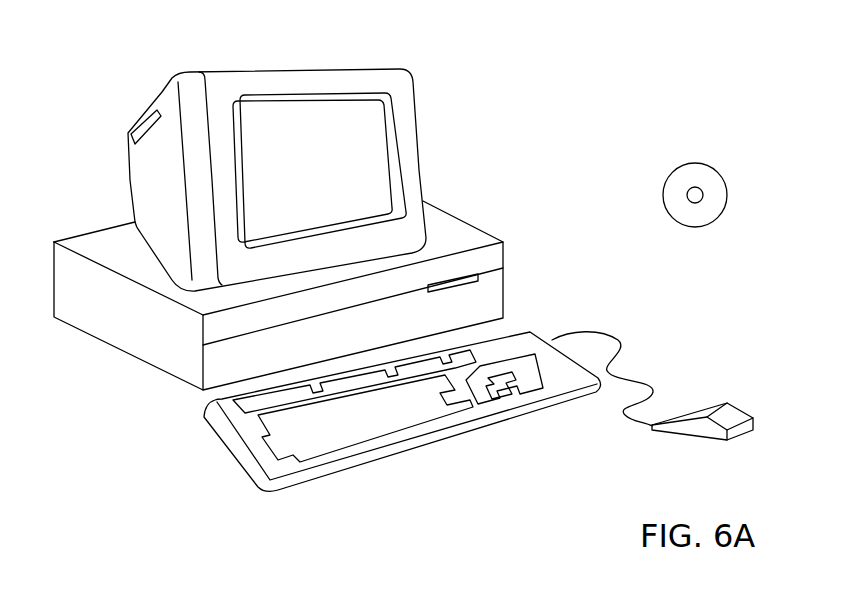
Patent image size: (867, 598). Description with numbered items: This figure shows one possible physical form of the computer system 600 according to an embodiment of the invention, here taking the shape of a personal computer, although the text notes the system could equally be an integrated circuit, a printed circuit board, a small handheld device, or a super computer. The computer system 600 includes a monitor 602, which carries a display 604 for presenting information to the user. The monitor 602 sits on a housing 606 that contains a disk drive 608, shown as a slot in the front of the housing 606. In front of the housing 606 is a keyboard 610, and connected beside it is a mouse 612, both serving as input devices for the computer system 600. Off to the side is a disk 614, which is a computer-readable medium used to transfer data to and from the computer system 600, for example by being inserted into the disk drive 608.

The computer system 600 is at (625, 45).
The monitor 602 is at (423, 186).
The display 604 is at (383, 130).
The housing 606 is at (167, 375).
The disk drive 608 is at (478, 274).
The keyboard 610 is at (396, 458).
The mouse 612 is at (743, 407).
The disk 614 is at (710, 166).